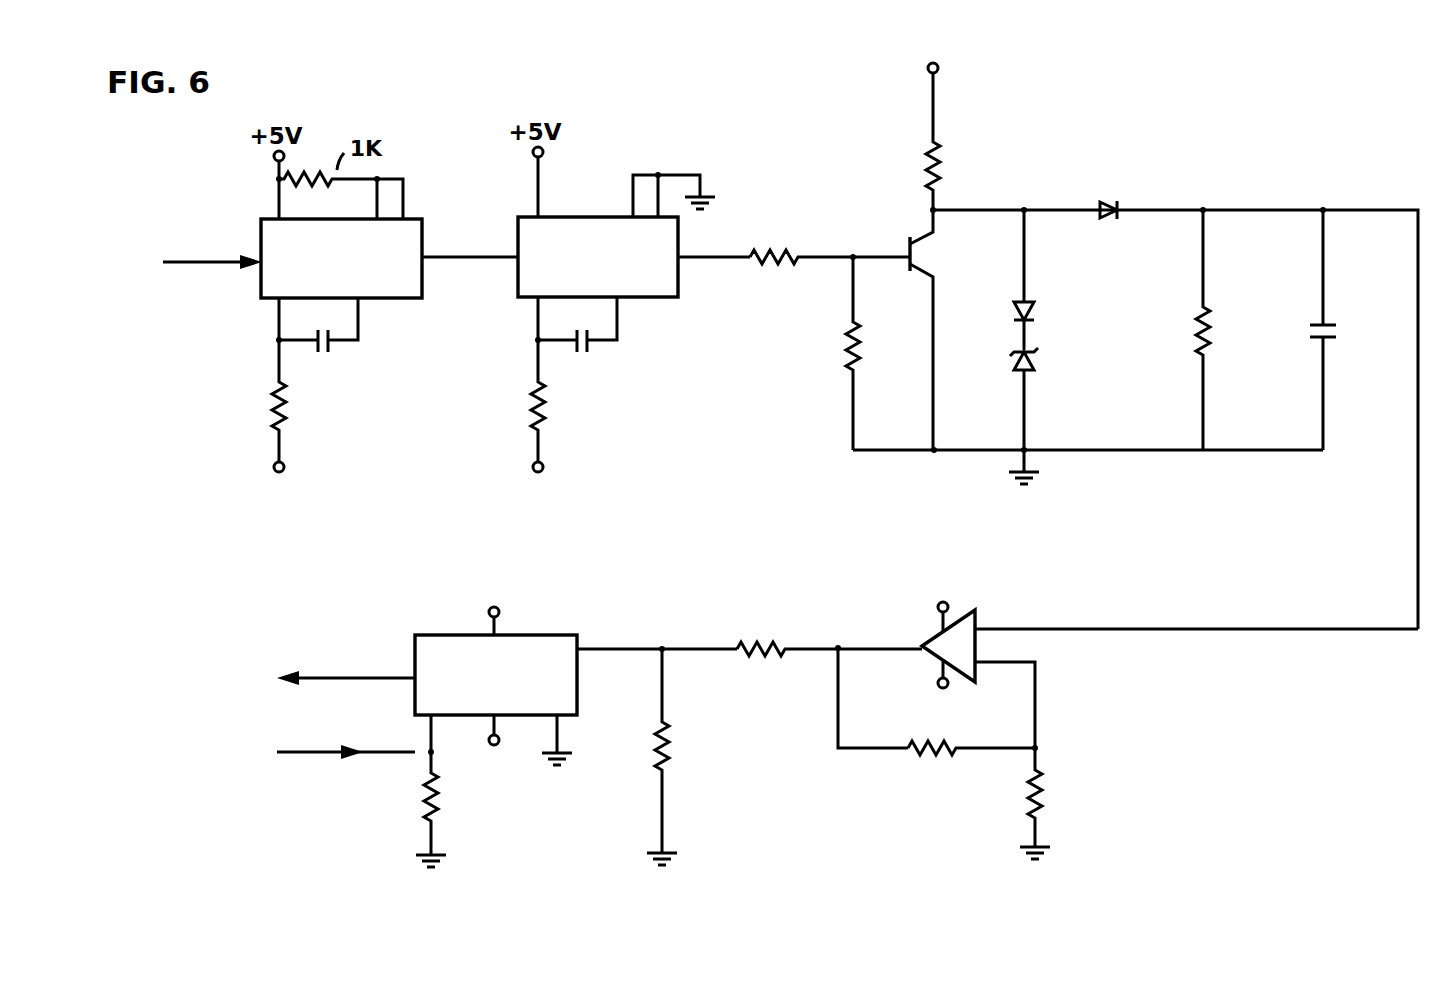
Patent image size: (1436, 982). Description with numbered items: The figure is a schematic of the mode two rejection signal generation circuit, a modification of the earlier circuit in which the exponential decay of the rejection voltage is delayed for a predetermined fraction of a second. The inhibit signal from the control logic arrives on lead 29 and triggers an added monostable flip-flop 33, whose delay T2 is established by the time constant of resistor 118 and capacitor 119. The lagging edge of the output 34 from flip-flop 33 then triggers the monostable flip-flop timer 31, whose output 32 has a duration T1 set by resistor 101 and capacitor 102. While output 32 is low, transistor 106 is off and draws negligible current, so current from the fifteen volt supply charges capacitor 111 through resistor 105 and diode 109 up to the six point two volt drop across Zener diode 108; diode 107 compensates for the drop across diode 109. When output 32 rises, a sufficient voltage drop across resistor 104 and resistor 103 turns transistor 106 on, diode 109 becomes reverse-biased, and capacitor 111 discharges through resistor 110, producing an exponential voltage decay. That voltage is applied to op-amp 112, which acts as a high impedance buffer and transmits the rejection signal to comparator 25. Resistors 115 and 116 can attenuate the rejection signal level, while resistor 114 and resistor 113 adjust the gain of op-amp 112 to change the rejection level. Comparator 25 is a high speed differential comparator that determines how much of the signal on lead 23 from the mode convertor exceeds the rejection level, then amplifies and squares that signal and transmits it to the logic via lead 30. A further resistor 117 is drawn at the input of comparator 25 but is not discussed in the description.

The lead 23 is at (317, 752).
The comparator 25 is at (476, 703).
The lead 29 is at (195, 262).
The lead 30 is at (335, 678).
The monostable flip-flop timer 31 is at (582, 277).
The monostable output 32 is at (700, 259).
The monostable flip-flop 33 is at (312, 277).
The output 34 is at (455, 262).
The resistor 101 is at (532, 395).
The capacitor 102 is at (596, 355).
The resistor 103 is at (782, 241).
The resistor 104 is at (847, 333).
The resistor 105 is at (928, 166).
The transistor 106 is at (925, 239).
The diode 107 is at (1038, 308).
The Zener diode 108 is at (1038, 362).
The diode 109 is at (1110, 183).
The resistor 110 is at (1212, 328).
The capacitor 111 is at (1343, 333).
The op-amp 112 is at (975, 611).
The resistor 113 is at (1025, 782).
The resistor 114 is at (927, 758).
The resistor 115 is at (768, 636).
The resistor 116 is at (677, 738).
The resistor 117 is at (417, 787).
The resistor 118 is at (273, 395).
The capacitor 119 is at (337, 355).